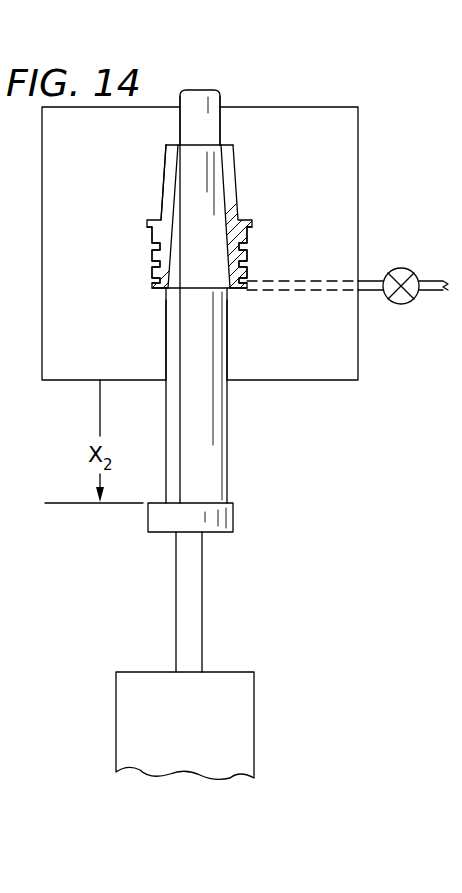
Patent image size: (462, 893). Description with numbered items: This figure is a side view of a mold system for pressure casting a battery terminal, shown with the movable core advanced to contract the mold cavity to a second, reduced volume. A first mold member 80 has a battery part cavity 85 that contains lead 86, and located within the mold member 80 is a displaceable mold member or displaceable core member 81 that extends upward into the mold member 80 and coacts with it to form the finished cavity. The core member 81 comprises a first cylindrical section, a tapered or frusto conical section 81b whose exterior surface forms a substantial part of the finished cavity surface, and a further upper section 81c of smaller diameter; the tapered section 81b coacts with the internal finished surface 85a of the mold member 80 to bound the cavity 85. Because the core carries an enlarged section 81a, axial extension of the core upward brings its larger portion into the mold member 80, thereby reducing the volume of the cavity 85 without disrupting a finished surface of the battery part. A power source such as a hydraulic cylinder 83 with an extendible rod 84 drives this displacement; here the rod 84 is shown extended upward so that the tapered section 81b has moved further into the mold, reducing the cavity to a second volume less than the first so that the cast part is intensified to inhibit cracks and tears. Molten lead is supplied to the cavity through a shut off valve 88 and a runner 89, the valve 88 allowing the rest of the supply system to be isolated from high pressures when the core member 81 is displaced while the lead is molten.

The first mold member 80 is at (333, 118).
The displaceable core member 81 is at (218, 429).
The enlarged section 81a is at (218, 350).
The tapered section 81b is at (193, 192).
The tube upper end portion 81c is at (213, 123).
The hydraulic cylinder 83 is at (254, 702).
The extendible rod 84 is at (196, 618).
The battery part cavity 85 is at (236, 186).
The internal finished surface 85a is at (166, 177).
The lead 86 is at (247, 227).
The shut off valve 88 is at (410, 268).
The runner 89 is at (372, 276).